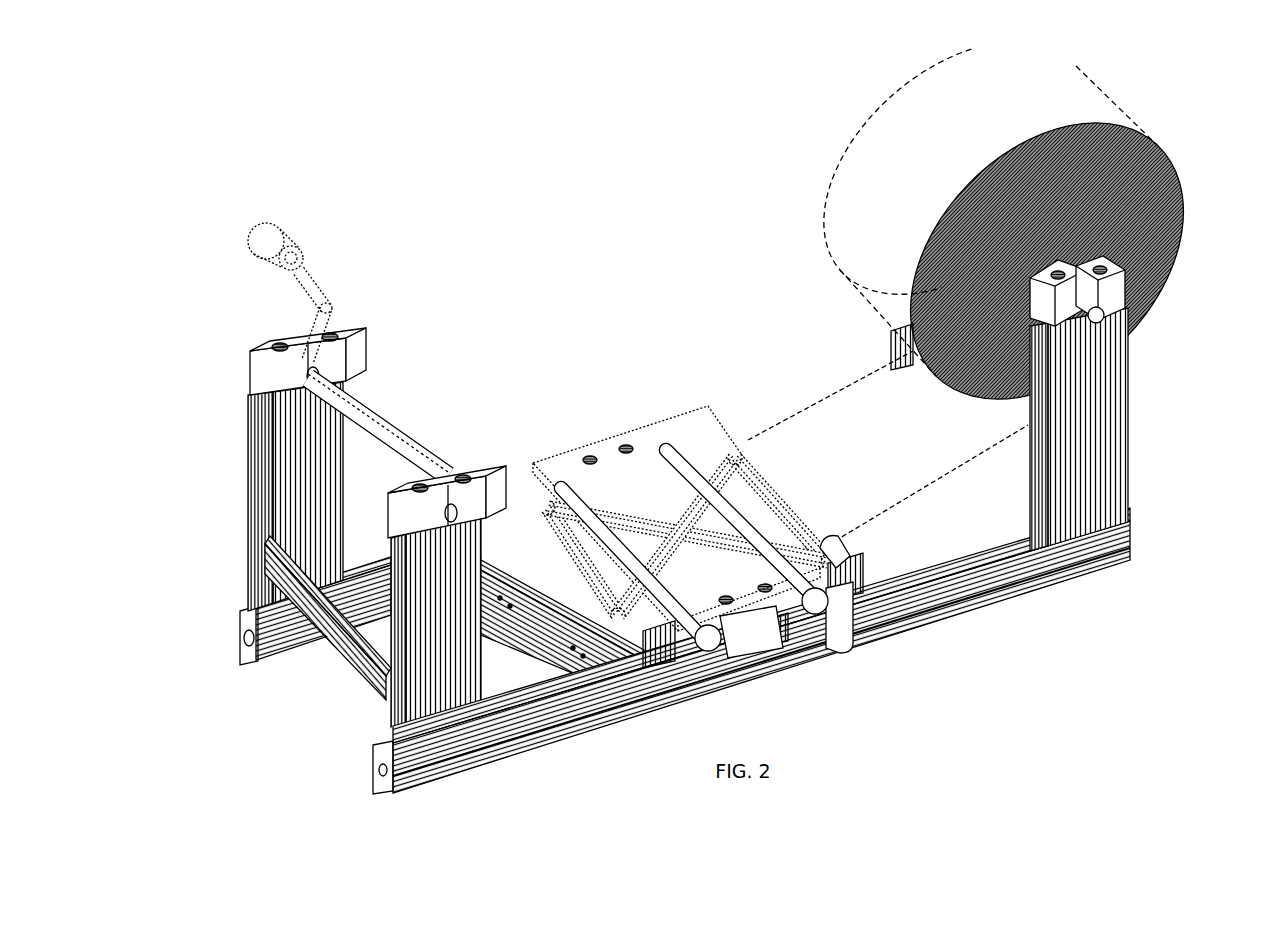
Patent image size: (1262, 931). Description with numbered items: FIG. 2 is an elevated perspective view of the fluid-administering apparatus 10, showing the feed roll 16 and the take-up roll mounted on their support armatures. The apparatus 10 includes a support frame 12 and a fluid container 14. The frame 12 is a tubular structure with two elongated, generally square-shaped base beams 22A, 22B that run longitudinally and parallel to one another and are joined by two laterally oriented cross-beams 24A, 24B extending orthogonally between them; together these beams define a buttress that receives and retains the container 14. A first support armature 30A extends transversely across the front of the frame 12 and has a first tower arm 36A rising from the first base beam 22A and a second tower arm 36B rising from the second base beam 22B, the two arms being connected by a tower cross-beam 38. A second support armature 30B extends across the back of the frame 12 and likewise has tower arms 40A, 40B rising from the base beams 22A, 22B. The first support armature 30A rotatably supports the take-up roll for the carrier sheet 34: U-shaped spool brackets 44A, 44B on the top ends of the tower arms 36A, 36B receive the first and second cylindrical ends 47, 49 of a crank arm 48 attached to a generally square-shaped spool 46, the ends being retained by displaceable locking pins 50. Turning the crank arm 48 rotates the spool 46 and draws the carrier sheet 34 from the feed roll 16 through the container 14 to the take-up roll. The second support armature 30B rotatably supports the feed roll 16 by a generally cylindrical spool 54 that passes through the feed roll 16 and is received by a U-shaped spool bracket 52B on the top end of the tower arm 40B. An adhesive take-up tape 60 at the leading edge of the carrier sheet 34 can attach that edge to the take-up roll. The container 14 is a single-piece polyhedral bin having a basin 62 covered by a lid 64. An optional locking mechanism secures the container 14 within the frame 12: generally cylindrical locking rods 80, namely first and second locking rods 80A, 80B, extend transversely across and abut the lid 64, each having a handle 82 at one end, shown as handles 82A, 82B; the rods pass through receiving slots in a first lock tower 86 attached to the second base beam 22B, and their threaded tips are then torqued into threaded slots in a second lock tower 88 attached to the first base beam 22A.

The fluid-administering apparatus 10 is at (540, 295).
The support frame 12 is at (640, 378).
The fluid container 14 is at (687, 490).
The feed roll 16 is at (863, 137).
The first base beam 22A is at (757, 427).
The second base beam 22B is at (953, 563).
The cross-beam 24A is at (523, 627).
The cross-beam 24B is at (858, 573).
The first support armature 30A is at (222, 425).
The second support armature 30B is at (1150, 398).
The carrier sheet 34 is at (845, 405).
The first tower arm 36A is at (245, 513).
The second tower arm 36B is at (387, 577).
The tower cross-beam 38 is at (330, 620).
The first tower arm 40A is at (883, 340).
The second tower arm 40B is at (1020, 510).
The U-shaped spool bracket 44A is at (320, 337).
The U-shaped spool bracket 44B is at (455, 467).
The square-shaped spool 46 is at (367, 423).
The first cylindrical end 47 is at (300, 333).
The crank arm 48 is at (293, 257).
The second cylindrical end 49 is at (443, 500).
The displaceable locking pin 50 is at (305, 360).
The U-shaped spool bracket 52B is at (1145, 298).
The cylindrical spool 54 is at (1097, 313).
The adhesive take-up tape 60 is at (503, 530).
The basin 62 is at (830, 628).
The lid 64 is at (823, 557).
The locking rod 80 is at (575, 487).
The first locking rod 80A is at (637, 547).
The second locking rod 80B is at (732, 517).
The handle 82 is at (680, 443).
The handle 82A is at (717, 640).
The handle 82B is at (823, 617).
The first lock tower 86 is at (740, 617).
The second lock tower 88 is at (597, 443).